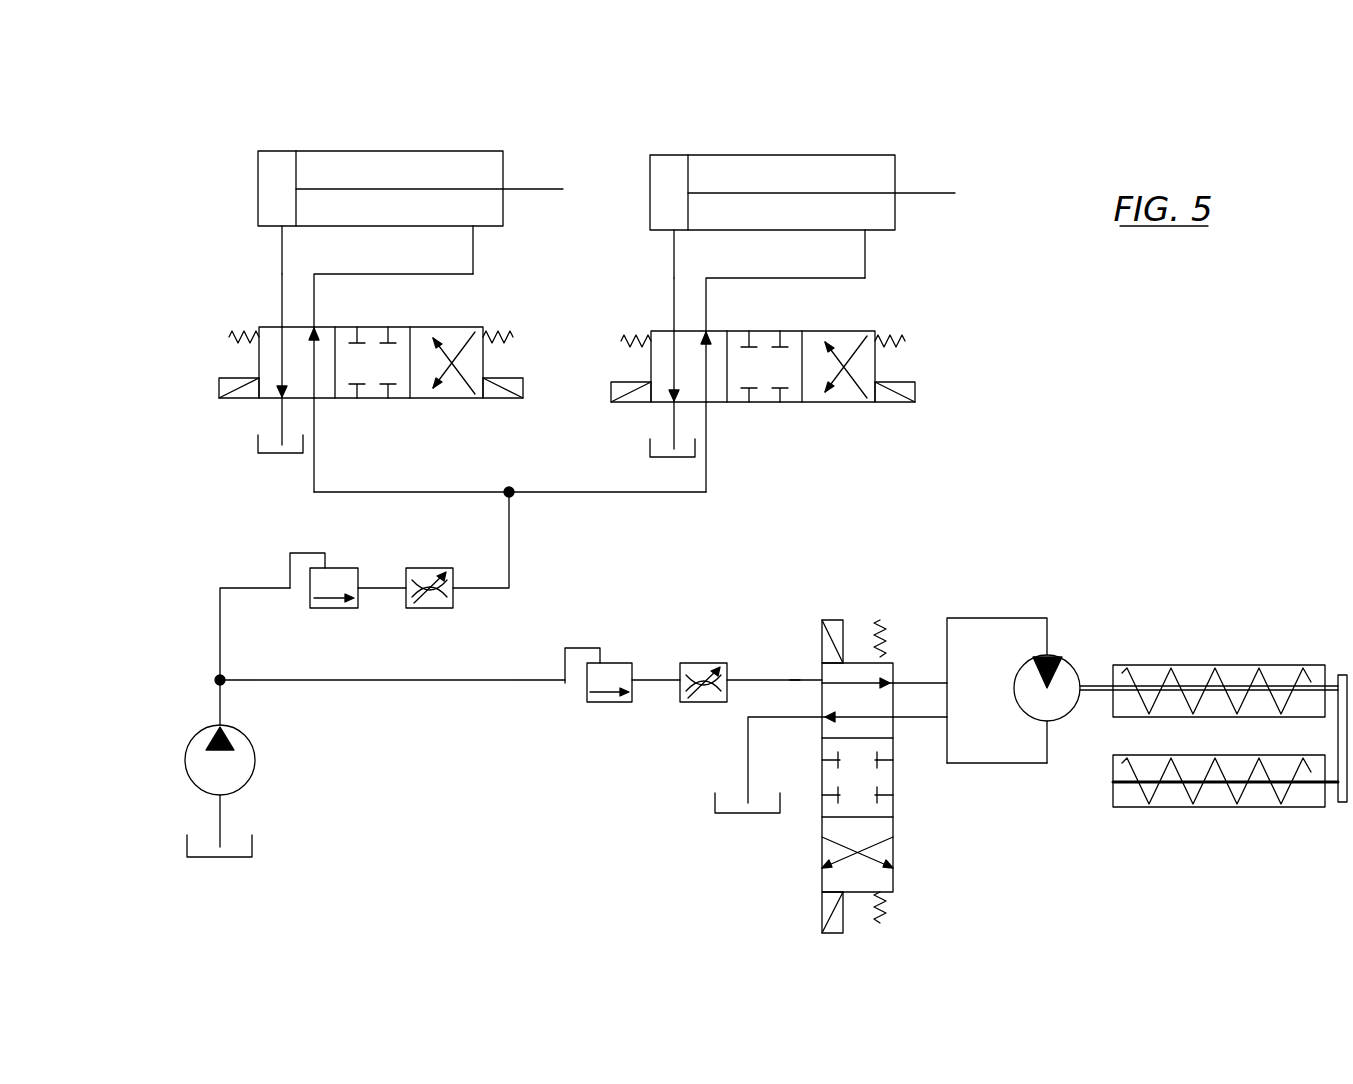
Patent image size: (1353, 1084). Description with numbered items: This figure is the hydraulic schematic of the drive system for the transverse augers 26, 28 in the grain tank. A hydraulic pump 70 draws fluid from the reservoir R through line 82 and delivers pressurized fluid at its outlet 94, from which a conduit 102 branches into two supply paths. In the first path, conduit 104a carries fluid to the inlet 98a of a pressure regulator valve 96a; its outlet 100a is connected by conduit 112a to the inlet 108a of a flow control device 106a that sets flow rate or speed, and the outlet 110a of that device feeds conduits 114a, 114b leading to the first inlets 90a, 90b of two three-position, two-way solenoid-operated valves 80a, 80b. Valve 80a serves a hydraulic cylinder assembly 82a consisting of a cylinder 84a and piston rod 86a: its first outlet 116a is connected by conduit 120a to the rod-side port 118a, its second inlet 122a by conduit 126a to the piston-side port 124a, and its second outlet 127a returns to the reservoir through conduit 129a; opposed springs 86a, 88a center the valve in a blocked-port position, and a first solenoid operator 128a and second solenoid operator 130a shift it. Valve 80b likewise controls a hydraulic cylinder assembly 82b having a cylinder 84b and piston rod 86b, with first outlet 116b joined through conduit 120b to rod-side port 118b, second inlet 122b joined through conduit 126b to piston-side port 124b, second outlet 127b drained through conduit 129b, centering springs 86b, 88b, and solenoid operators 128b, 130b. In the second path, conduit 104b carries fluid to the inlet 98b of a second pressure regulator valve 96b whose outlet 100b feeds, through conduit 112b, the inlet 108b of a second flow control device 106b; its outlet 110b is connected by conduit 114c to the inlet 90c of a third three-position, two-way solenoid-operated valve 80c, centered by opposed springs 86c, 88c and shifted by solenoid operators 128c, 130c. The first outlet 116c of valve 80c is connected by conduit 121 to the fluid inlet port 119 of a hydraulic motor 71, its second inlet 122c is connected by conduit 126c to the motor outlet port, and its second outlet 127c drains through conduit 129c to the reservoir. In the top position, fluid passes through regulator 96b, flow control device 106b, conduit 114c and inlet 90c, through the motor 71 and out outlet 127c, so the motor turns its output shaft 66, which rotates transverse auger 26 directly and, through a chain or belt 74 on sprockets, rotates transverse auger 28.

The transverse auger 26 is at (1205, 666).
The transverse auger 28 is at (1185, 808).
The output shaft 66 is at (1108, 685).
The hydraulic pump 70 is at (250, 781).
The hydraulic motor 71 is at (1047, 660).
The chain or belt 74 is at (1342, 805).
The three-position, two-way solenoid-operated valve 80a is at (570, 148).
The three-position, two-way solenoid-operated valve 80b is at (572, 104).
The three-position, two-way solenoid-operated valve 80c is at (945, 859).
The reservoir line 82 is at (226, 805).
The hydraulic cylinder assembly 82a is at (802, 211).
The hydraulic cylinder assembly 82b is at (278, 152).
The cylinder 84a is at (772, 174).
The cylinder 84b is at (333, 152).
The piston rod 86a is at (821, 227).
The piston rod 86b is at (448, 188).
The spring 86c is at (883, 618).
The spring 88a is at (730, 360).
The spring 88b is at (238, 333).
The spring 88c is at (850, 742).
The first inlet 90a is at (746, 447).
The first inlet 90b is at (318, 402).
The inlet 90c is at (821, 660).
The outlet 94 is at (251, 754).
The pressure regulator valve 96a is at (340, 609).
The pressure regulator valve 96b is at (606, 703).
The inlet 98a is at (290, 585).
The inlet 98b is at (566, 682).
The outlet 100a is at (319, 583).
The outlet 100b is at (586, 684).
The conduit 102 is at (218, 700).
The conduit 104a is at (220, 630).
The conduit 104b is at (420, 682).
The flow control valve device 106a is at (428, 609).
The flow control device 106b is at (690, 703).
The inlet 108a is at (413, 592).
The inlet 108b is at (679, 693).
The outlet 110a is at (455, 592).
The outlet 110b is at (735, 682).
The conduit 112a is at (402, 578).
The conduit 112b is at (676, 670).
The conduit 114a is at (585, 494).
The conduit 114b is at (375, 492).
The conduit 114c is at (796, 679).
The first outlet 116a is at (739, 348).
The first outlet 116b is at (317, 328).
The first outlet 116c is at (905, 670).
The port 118a is at (900, 254).
The port 118b is at (475, 232).
The fluid inlet port 119 is at (1076, 640).
The conduit 120a is at (785, 304).
The conduit 120b is at (412, 275).
The conduit 121 is at (998, 693).
The second inlet 122a is at (627, 331).
The second inlet 122b is at (281, 330).
The second inlet 122c is at (896, 722).
The port 124a is at (716, 254).
The port 124b is at (286, 230).
The conduit 126a is at (624, 280).
The conduit 126b is at (281, 300).
The conduit 126c is at (990, 765).
The second outlet 127a is at (618, 425).
The second outlet 127b is at (280, 402).
The second outlet 127c is at (822, 721).
The first solenoid operator 128a is at (905, 420).
The first solenoid operator 128b is at (500, 400).
The solenoid 128c is at (838, 618).
The conduit 129a is at (630, 462).
The conduit 129b is at (270, 445).
The conduit 129c is at (746, 750).
The second solenoid operator 130a is at (587, 405).
The second solenoid operator 130b is at (242, 380).
The solenoid 130c is at (826, 920).